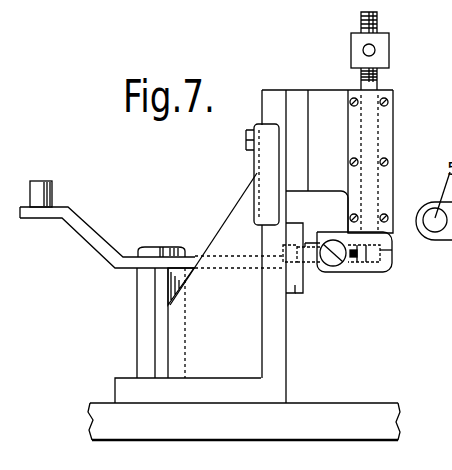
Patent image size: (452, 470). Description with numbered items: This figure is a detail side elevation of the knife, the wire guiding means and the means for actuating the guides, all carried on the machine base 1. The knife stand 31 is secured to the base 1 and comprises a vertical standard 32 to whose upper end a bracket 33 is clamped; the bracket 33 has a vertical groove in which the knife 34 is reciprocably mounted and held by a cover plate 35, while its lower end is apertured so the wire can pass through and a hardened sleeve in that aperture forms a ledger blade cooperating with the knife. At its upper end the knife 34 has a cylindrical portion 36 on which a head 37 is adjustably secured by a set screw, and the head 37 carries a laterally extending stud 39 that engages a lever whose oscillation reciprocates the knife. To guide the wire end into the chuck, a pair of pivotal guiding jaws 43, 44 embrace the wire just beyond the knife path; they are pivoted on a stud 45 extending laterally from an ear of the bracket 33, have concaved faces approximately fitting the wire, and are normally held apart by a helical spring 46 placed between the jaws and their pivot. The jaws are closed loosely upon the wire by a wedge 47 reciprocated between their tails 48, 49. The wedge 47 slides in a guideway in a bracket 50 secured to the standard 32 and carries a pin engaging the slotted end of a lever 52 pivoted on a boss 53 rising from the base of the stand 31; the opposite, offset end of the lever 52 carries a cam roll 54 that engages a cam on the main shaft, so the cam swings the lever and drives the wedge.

The base or foundation 1 is at (330, 410).
The knife stand 31 is at (218, 392).
The vertical standard 32 is at (276, 345).
The bracket 33 is at (324, 96).
The knife 34 is at (377, 118).
The cover plate 35 is at (385, 136).
The cylindrical portion 36 is at (379, 22).
The head 37 is at (391, 40).
The laterally extending stud 39 is at (364, 47).
The guiding jaw 43 is at (392, 251).
The guiding jaw 44 is at (376, 269).
The stud 45 is at (337, 266).
The helical spring 46 is at (357, 277).
The wedge 47 is at (278, 262).
The tail 48 is at (305, 242).
The tail 49 is at (310, 265).
The bracket 50 is at (294, 293).
The lever 52 is at (92, 230).
The boss 53 is at (140, 294).
The cam roll 54 is at (53, 193).